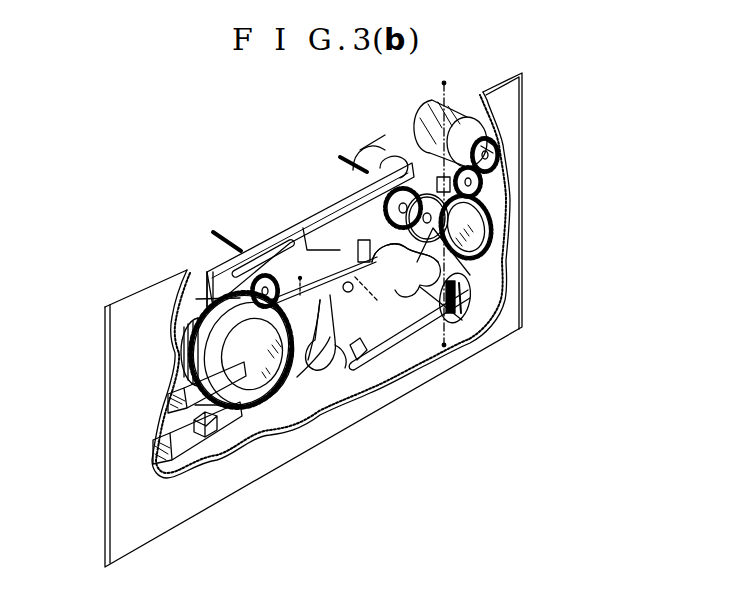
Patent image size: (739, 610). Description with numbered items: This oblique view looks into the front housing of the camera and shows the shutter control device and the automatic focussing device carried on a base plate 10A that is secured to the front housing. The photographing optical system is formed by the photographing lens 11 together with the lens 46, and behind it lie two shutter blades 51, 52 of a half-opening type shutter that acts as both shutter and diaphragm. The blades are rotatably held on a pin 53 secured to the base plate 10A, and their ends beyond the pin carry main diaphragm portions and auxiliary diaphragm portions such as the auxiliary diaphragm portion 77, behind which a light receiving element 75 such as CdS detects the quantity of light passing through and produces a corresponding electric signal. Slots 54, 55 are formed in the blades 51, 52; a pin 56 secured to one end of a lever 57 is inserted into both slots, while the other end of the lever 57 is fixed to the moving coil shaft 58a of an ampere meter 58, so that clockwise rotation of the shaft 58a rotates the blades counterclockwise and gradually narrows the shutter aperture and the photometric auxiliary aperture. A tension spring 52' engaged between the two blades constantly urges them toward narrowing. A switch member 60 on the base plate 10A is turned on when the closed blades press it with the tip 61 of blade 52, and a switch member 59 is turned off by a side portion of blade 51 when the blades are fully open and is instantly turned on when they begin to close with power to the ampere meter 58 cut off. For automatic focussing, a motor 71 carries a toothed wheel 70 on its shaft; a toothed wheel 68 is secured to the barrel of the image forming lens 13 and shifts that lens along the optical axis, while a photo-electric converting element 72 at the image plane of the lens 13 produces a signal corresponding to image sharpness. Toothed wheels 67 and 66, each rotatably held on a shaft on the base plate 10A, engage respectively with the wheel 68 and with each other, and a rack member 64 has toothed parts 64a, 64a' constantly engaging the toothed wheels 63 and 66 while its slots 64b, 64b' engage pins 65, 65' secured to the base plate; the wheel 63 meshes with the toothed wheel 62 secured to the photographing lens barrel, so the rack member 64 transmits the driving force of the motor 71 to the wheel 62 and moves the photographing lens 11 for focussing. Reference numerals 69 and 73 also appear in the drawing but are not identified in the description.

The base plate 10A is at (120, 523).
The photographing lens 11 is at (247, 372).
The image forming lens 13 is at (470, 228).
The lens 46 is at (210, 343).
The shutter blade 51 is at (297, 377).
The shutter blade 52 is at (364, 281).
The tension spring 52' is at (341, 267).
The pin 53 is at (352, 292).
The slot 54 is at (353, 350).
The slot 55 is at (328, 355).
The pin 56 is at (348, 367).
The lever 57 is at (410, 330).
The ampere meter 58 is at (460, 300).
The moving coil shaft 58a is at (463, 290).
The switch member 59 is at (183, 455).
The switch member 60 is at (180, 392).
The tip of shutter blade 61 is at (200, 357).
The toothed wheel 62 is at (235, 430).
The toothed wheel 63 is at (262, 276).
The rack member 64 is at (290, 217).
The toothed part 64a is at (182, 268).
The slot 64b is at (193, 256).
The toothed part 64a' is at (354, 167).
The slot 64b' is at (364, 136).
The pin 65 is at (250, 226).
The pin 65' is at (330, 143).
The toothed wheel 66 is at (408, 190).
The toothed wheel 67 is at (428, 194).
The toothed wheel 68 is at (491, 208).
The gear 69 is at (481, 178).
The toothed wheel 70 is at (498, 150).
The motor 71 is at (457, 118).
The photo-electric converting element 72 is at (447, 132).
The pin 73 is at (363, 150).
The light receiving element 75 is at (310, 230).
The auxiliary diaphragm portion 77 is at (445, 335).